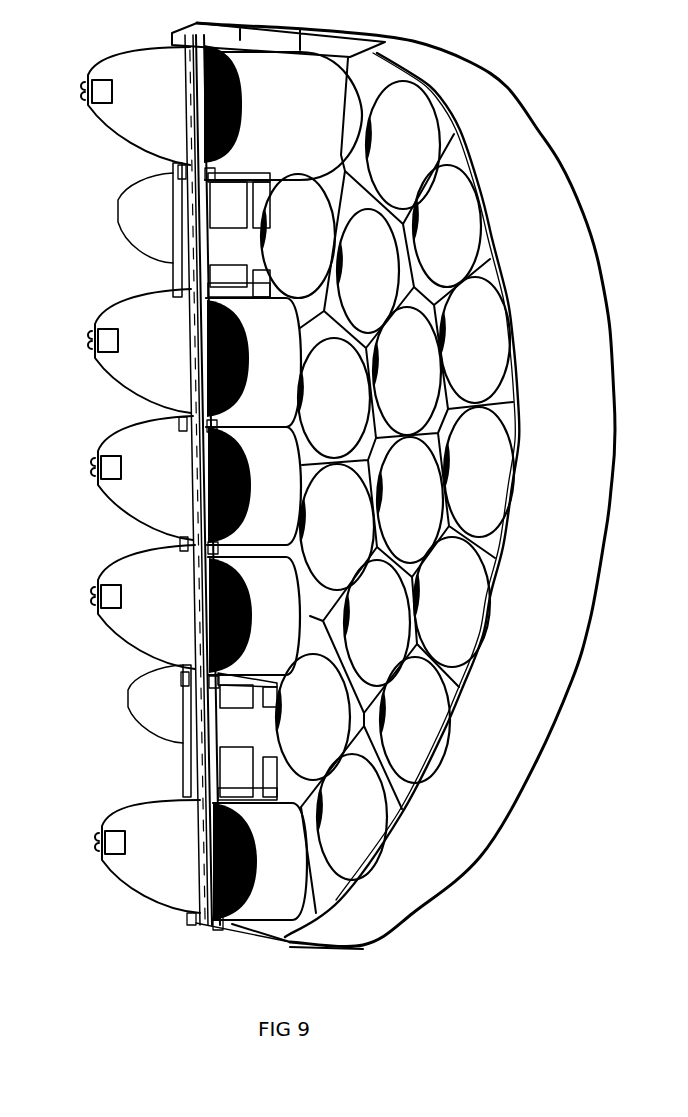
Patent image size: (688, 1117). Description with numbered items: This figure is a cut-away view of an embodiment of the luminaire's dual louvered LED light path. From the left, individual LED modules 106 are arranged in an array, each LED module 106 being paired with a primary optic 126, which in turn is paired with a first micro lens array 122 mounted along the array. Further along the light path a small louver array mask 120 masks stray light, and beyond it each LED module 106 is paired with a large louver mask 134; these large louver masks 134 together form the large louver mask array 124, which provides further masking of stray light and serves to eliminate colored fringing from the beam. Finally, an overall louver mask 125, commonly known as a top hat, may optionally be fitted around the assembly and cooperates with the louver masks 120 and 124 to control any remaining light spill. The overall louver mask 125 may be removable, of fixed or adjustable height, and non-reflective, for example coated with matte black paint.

The LED module 106 is at (100, 467).
The small louver array mask 120 is at (250, 582).
The first micro lens array 122 is at (193, 613).
The large louver mask array 124 is at (457, 702).
The overall louver mask 125 is at (470, 847).
The primary optic 126 is at (137, 630).
The large louver mask 134 is at (497, 470).